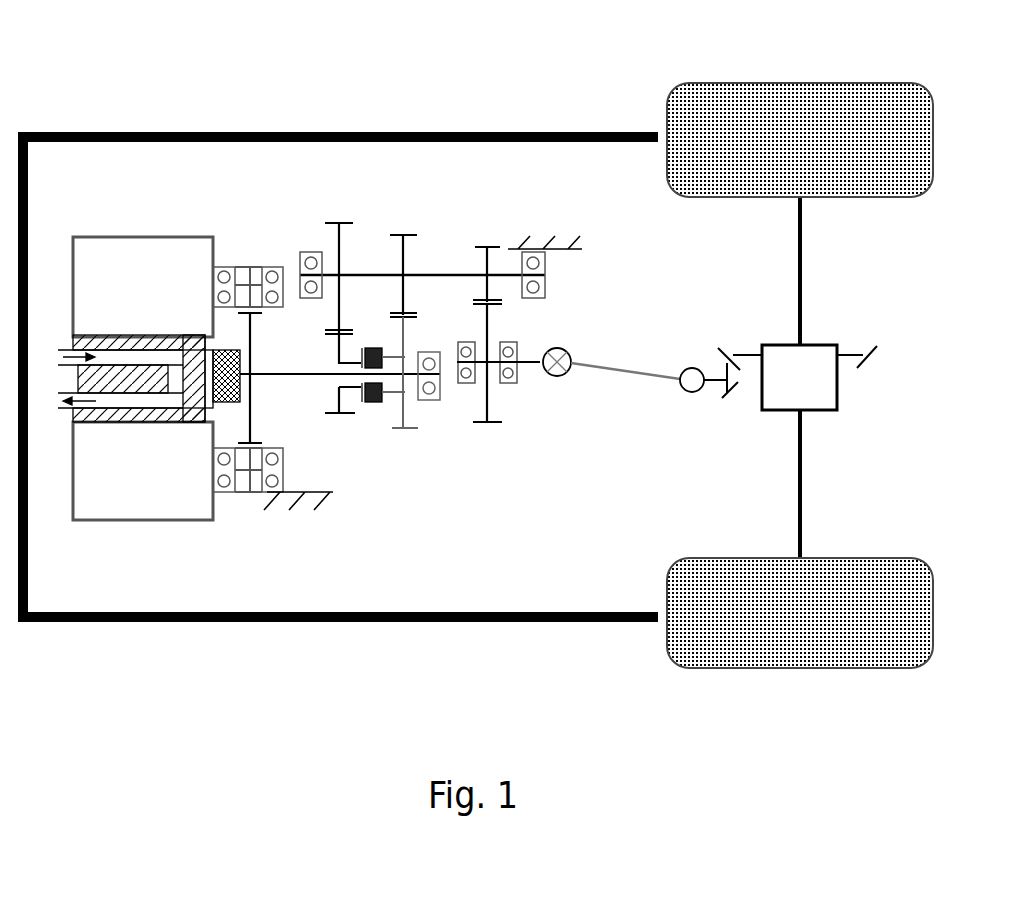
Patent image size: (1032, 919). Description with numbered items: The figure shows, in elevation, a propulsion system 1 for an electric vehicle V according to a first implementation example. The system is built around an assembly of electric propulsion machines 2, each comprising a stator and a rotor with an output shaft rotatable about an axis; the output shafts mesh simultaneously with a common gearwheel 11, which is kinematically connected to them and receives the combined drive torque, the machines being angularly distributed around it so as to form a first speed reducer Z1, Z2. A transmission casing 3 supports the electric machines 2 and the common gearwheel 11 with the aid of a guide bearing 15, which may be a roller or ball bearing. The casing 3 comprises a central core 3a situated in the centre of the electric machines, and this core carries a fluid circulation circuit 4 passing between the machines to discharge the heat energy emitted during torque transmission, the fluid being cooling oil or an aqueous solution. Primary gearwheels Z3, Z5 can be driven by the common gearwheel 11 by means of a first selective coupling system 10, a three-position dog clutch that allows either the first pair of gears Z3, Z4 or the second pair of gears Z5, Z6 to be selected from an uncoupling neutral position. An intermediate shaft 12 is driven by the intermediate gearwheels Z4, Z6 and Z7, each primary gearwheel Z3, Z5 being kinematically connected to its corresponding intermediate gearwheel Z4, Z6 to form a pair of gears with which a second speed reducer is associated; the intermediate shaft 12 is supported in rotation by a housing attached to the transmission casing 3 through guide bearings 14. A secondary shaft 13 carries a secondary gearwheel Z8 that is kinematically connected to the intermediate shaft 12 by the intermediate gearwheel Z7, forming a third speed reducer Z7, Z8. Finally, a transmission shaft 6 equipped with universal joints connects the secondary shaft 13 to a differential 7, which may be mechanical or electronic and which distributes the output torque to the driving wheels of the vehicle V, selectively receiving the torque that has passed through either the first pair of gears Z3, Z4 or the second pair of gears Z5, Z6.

The propulsion system 1 is at (120, 190).
The electric propulsion machine 2 is at (139, 262).
The transmission casing 3 is at (184, 216).
The central core 3a is at (185, 333).
The fluid circulation circuit 4 is at (160, 405).
The transmission shaft 6 is at (598, 360).
The differential 7 is at (780, 345).
The first selective coupling system 10 is at (377, 402).
The common gearwheel 11 is at (286, 372).
The intermediate shaft 12 is at (372, 273).
The secondary shaft 13 is at (527, 362).
The guide bearing 14 is at (536, 257).
The guide bearing 15 is at (230, 388).
The electric vehicle V is at (522, 620).
The first speed reducer gear Z1 is at (248, 263).
The first speed reducer gear Z2 is at (273, 411).
The primary gearwheel Z3 is at (346, 429).
The intermediate gearwheel Z4 is at (343, 271).
The primary gearwheel Z5 is at (416, 394).
The intermediate gearwheel Z6 is at (409, 248).
The intermediate gearwheel Z7 is at (485, 242).
The secondary gearwheel Z8 is at (498, 388).